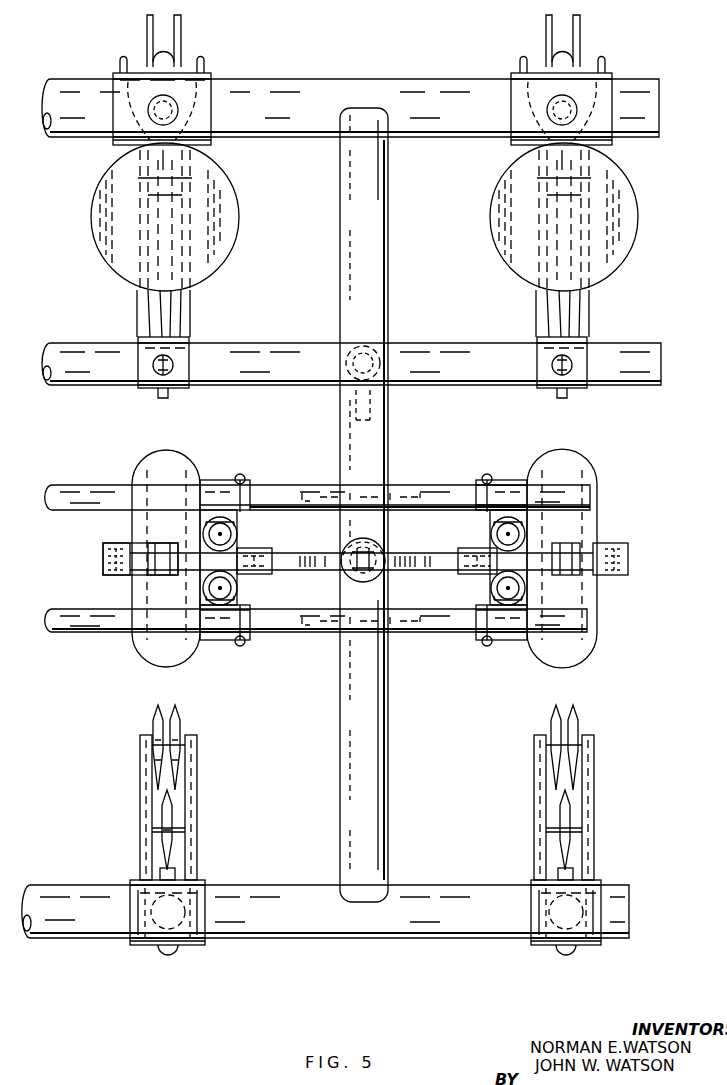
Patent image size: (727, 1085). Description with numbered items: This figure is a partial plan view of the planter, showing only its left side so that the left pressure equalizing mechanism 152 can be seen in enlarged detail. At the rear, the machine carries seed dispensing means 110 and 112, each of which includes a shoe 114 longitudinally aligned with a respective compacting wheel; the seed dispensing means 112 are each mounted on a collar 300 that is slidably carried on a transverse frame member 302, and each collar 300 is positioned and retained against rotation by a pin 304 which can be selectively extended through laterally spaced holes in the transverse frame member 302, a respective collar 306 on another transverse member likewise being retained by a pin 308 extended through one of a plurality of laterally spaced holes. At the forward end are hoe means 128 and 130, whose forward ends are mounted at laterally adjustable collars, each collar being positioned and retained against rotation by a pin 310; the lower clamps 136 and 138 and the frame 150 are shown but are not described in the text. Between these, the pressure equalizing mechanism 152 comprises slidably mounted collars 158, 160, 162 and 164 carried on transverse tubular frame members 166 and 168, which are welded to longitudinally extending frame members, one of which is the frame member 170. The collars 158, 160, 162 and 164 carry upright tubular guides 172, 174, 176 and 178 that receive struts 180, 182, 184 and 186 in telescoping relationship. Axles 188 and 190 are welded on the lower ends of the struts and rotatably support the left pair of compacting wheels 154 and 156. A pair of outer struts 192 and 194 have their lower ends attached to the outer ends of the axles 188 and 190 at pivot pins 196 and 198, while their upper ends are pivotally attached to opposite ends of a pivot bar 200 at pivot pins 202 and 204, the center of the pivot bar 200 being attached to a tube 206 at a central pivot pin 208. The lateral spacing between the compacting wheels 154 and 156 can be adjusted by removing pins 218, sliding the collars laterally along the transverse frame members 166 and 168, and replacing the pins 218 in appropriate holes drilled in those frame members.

The seed dispensing means 110 is at (180, 43).
The seed dispensing means 112 is at (580, 48).
The shoe 114 is at (173, 323).
The hoe means 128 is at (199, 829).
The hoe means 130 is at (597, 825).
The left lower clamp 136 is at (204, 948).
The right lower clamp 138 is at (593, 948).
The frame 150 is at (375, 79).
The pressure equalizing mechanism 152 is at (413, 483).
The compacting wheel 154 is at (182, 455).
The compacting wheel 156 is at (588, 460).
The collar 158 is at (215, 480).
The collar 160 is at (228, 642).
The collar 162 is at (512, 480).
The collar 164 is at (517, 642).
The transverse tubular frame member 166 is at (72, 485).
The transverse tubular frame member 168 is at (100, 634).
The longitudinally extending frame member 170 is at (388, 330).
The upright tubular guide 172 is at (238, 533).
The upright tubular guide 174 is at (490, 532).
The upright tubular guide 176 is at (242, 590).
The upright tubular guide 178 is at (490, 590).
The strut 180 is at (207, 533).
The strut 182 is at (528, 534).
The strut 184 is at (207, 589).
The strut 186 is at (525, 590).
The axle 188 is at (272, 570).
The axle 190 is at (458, 569).
The outer strut 192 is at (128, 575).
The outer strut 194 is at (607, 575).
The pivot pin 196 is at (103, 570).
The pivot pin 198 is at (630, 563).
The pivot bar 200 is at (402, 553).
The pivot pin 202 is at (140, 545).
The pivot pin 204 is at (630, 548).
The tube 206 is at (350, 545).
The central pivot pin 208 is at (343, 558).
The pin 218 is at (247, 480).
The collar 300 is at (138, 388).
The transverse frame member 302 is at (260, 343).
The pin 304 is at (175, 372).
The collar 306 is at (211, 75).
The pin 308 is at (152, 100).
The pin 310 is at (163, 953).